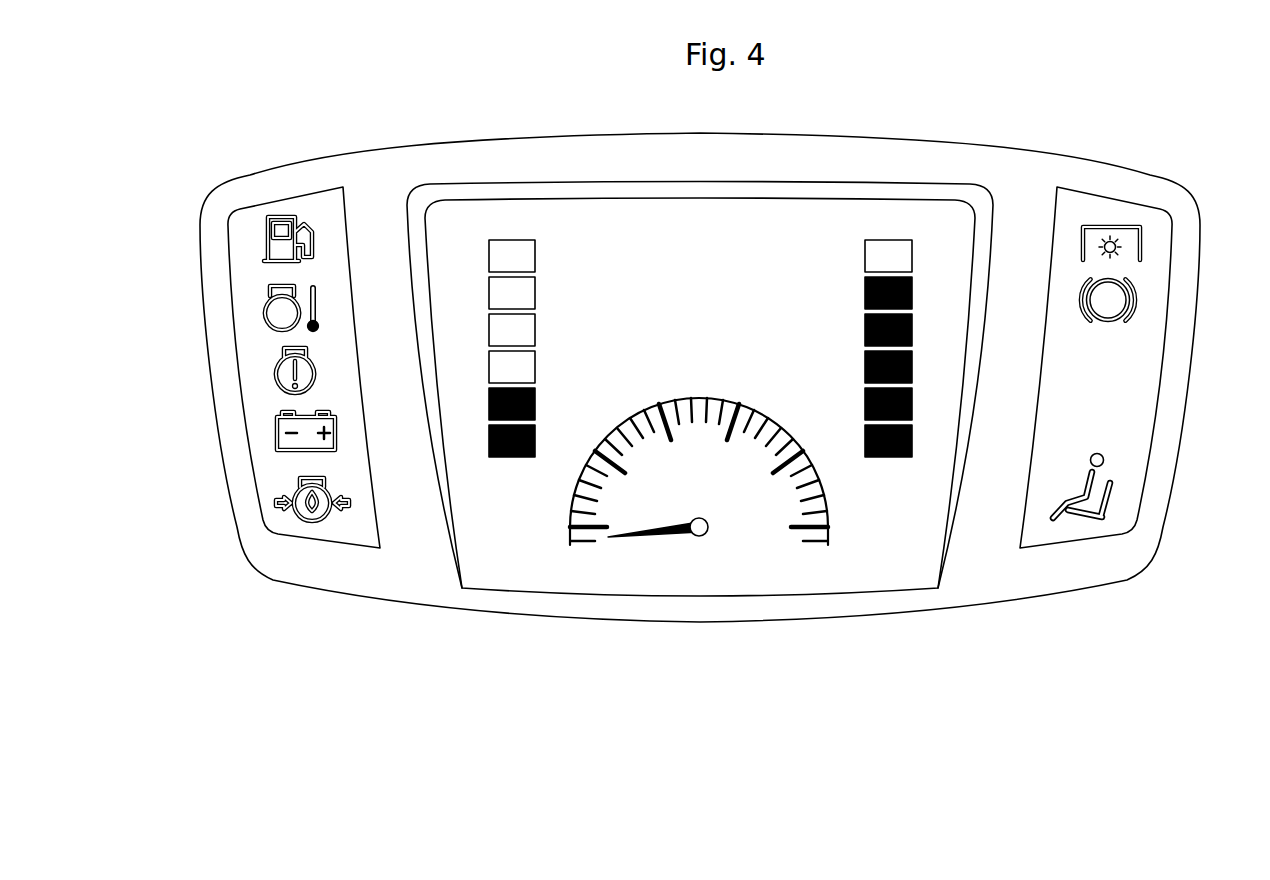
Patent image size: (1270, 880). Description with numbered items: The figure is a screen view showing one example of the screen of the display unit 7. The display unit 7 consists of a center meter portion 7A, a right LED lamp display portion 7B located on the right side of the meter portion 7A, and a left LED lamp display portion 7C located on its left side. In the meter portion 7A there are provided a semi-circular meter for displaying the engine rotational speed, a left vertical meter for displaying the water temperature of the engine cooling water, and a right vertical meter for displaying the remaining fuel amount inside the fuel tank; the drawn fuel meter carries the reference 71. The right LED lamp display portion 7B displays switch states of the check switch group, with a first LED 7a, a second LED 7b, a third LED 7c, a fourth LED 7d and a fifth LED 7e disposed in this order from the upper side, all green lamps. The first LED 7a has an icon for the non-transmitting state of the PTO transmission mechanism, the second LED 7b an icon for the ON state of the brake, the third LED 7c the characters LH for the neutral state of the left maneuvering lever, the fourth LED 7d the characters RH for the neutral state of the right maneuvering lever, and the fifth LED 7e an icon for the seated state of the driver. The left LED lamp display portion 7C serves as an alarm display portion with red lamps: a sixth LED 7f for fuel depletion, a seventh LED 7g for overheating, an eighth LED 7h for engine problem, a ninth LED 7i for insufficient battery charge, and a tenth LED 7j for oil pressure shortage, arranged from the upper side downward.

The display unit 7 is at (995, 109).
The meter portion 7A is at (813, 169).
The right LED lamp display portion 7B is at (1117, 184).
The left LED lamp display portion 7C is at (270, 186).
The fuel level gauge 71 is at (921, 280).
The first LED 7a is at (1141, 244).
The second LED 7b is at (1136, 300).
The third LED 7c is at (1129, 361).
The fourth LED 7d is at (1126, 419).
The fifth LED 7e is at (1111, 504).
The sixth LED 7f is at (266, 243).
The seventh LED 7g is at (263, 318).
The eighth LED 7h is at (276, 376).
The ninth LED 7i is at (275, 433).
The tenth LED 7j is at (276, 503).